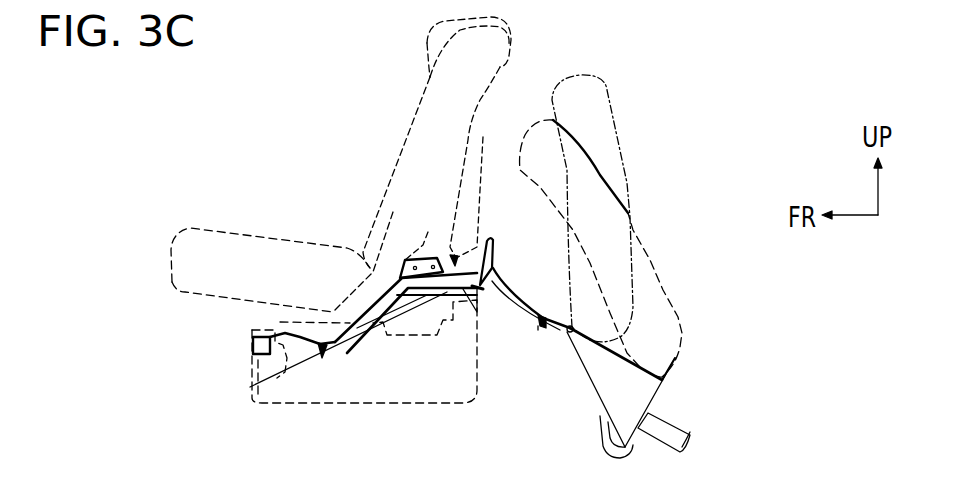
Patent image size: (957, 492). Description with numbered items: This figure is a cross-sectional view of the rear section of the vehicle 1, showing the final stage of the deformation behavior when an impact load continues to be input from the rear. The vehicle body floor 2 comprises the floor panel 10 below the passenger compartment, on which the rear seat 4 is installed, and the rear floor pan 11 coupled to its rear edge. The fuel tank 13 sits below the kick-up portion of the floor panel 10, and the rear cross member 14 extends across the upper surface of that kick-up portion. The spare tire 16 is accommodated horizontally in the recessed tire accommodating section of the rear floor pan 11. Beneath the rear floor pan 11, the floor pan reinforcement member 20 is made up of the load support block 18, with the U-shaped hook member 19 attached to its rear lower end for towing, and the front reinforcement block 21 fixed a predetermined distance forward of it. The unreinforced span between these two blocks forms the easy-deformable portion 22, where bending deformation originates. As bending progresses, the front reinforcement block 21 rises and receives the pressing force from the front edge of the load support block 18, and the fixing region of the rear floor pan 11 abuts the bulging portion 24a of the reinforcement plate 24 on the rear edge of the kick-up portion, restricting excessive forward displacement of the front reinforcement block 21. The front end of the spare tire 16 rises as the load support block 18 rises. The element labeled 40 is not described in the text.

The vehicle 1 is at (635, 165).
The vehicle body floor 2 is at (428, 385).
The rear seat 4 is at (393, 167).
The floor panel 10 is at (320, 352).
The rear floor pan 11 is at (538, 325).
The fuel tank 13 is at (387, 403).
The rear cross member 14 is at (420, 247).
The spare tire 16 is at (627, 183).
The load support block 18 is at (583, 378).
The hook member 19 is at (662, 415).
The floor pan reinforcement member 20 is at (534, 359).
The front reinforcement block 21 is at (487, 290).
The easy-deformable portion 22 is at (492, 236).
The reinforcement plate 24 is at (472, 122).
The bulging portion 24a is at (476, 210).
The seat belt 40 is at (690, 432).